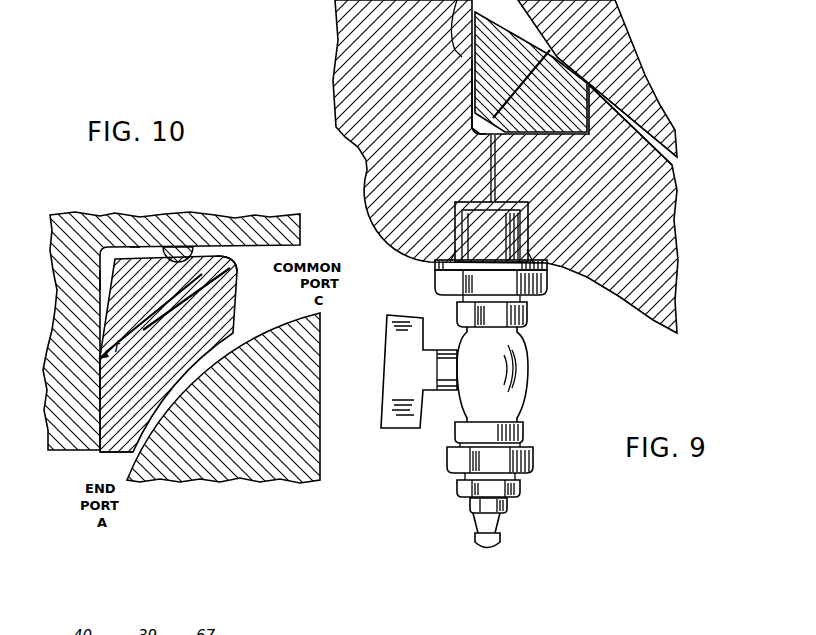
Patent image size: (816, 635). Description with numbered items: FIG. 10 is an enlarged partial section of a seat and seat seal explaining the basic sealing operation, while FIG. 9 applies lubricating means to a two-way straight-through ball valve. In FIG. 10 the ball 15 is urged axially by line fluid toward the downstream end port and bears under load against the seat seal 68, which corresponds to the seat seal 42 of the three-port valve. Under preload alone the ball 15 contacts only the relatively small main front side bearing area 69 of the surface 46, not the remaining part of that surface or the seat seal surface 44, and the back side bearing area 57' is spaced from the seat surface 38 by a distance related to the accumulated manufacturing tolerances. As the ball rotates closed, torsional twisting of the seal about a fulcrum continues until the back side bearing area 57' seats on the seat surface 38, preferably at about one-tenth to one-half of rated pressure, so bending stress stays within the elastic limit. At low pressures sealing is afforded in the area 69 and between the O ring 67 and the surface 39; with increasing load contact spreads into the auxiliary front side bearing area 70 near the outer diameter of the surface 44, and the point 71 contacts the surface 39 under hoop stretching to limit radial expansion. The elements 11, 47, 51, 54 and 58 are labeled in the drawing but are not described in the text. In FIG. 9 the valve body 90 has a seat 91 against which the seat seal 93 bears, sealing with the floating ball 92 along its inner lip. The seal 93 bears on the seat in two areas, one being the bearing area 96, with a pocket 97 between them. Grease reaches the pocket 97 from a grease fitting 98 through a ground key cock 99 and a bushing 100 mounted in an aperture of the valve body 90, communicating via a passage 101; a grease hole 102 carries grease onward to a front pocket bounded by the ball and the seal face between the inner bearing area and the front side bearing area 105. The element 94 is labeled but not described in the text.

In FIG. 10, the valve body 11 is at (47, 350).
In FIG. 10, the ball 15 is at (292, 476).
In FIG. 10, the seat surface 38 is at (98, 280).
In FIG. 10, the surface 39 is at (250, 231).
In FIG. 10, the seat seal 42 is at (220, 288).
In FIG. 10, the seat seal surface 44 is at (185, 372).
In FIG. 10, the surface 46 is at (167, 396).
In FIG. 10, the end face 47 is at (103, 455).
In FIG. 10, the shoulder 51 is at (227, 260).
In FIG. 10, the cover 54 is at (103, 218).
In FIG. 10, the back side bearing area 57' is at (57, 438).
In FIG. 10, the port 58 is at (100, 382).
In FIG. 10, the O ring 67 is at (177, 247).
In FIG. 10, the seat seal 68 is at (243, 300).
In FIG. 10, the main front side bearing area 69 is at (153, 443).
In FIG. 10, the auxiliary front side bearing area 70 is at (217, 327).
In FIG. 10, the point 71 is at (135, 247).
In FIG. 9, the valve body 90 is at (657, 213).
In FIG. 9, the seat 91 is at (473, 137).
In FIG. 9, the floating ball 92 is at (623, 58).
In FIG. 9, the seat seal 93 is at (510, 61).
In FIG. 9, the passage 94 is at (565, 56).
In FIG. 9, the bearing area 96 is at (512, 134).
In FIG. 9, the pocket 97 is at (483, 125).
In FIG. 9, the grease fitting 98 is at (532, 483).
In FIG. 9, the ground key cock 99 is at (540, 358).
In FIG. 9, the bushing 100 is at (547, 285).
In FIG. 9, the passage 101 is at (490, 188).
In FIG. 9, the grease hole 102 is at (519, 99).
In FIG. 9, the front side bearing area 105 is at (545, 25).